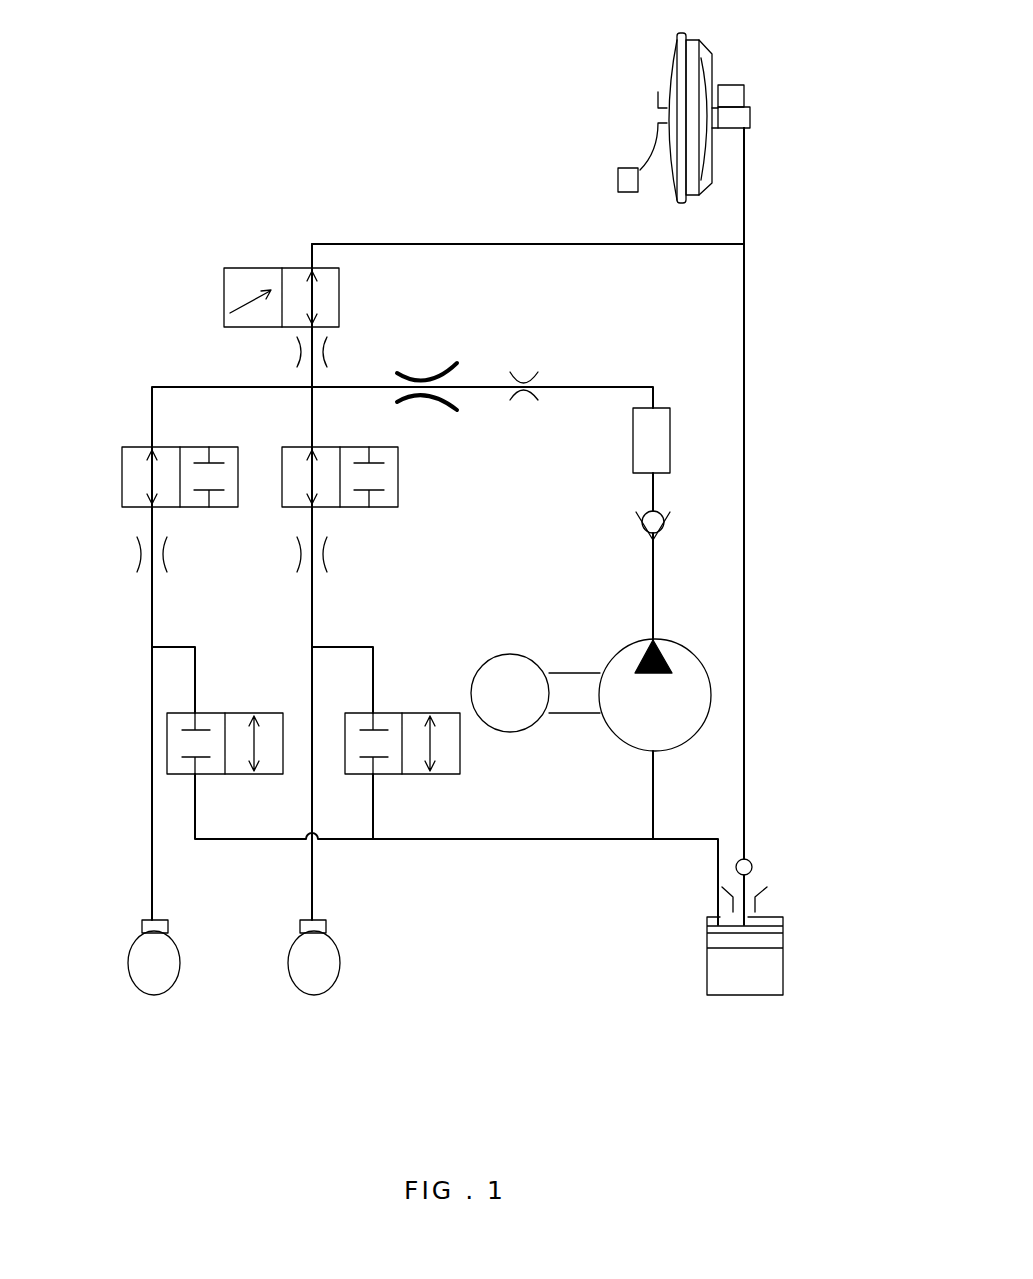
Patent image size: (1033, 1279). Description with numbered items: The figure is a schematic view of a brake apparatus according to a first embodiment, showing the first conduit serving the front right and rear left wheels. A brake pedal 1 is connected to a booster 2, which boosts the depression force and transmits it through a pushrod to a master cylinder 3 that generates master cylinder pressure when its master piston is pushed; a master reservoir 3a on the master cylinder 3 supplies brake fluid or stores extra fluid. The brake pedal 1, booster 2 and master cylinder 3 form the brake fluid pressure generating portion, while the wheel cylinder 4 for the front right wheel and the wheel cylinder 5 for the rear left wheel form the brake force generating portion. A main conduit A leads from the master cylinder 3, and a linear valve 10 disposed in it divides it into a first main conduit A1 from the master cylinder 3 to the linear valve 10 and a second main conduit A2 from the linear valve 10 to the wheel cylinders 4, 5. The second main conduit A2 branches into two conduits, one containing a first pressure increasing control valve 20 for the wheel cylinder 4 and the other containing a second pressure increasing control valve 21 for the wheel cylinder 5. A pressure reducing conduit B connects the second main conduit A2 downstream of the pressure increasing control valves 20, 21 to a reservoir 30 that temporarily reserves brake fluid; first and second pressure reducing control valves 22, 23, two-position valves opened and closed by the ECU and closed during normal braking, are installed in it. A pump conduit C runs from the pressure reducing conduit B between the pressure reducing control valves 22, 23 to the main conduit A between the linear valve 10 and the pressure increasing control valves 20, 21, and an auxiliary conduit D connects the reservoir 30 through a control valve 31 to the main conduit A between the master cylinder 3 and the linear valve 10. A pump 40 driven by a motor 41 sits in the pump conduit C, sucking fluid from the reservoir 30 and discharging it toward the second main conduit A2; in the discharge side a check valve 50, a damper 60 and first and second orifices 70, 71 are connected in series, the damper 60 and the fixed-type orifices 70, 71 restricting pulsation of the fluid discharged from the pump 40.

The brake pedal 1 is at (618, 180).
The booster 2 is at (670, 58).
The master cylinder 3 is at (762, 114).
The master reservoir 3a is at (727, 98).
The wheel cylinder 4 is at (313, 997).
The wheel cylinder 5 is at (155, 997).
The linear valve 10 is at (224, 297).
The first pressure increasing control valve 20 is at (398, 478).
The second pressure increasing control valve 21 is at (122, 479).
The first pressure reducing control valve 22 is at (418, 776).
The second pressure reducing control valve 23 is at (236, 776).
The reservoir 30 is at (745, 997).
The control valve 31 is at (755, 867).
The pump 40 is at (612, 655).
The motor 41 is at (493, 655).
The check valve 50 is at (637, 524).
The damper 60 is at (633, 445).
The first orifice 70 is at (523, 378).
The second orifice 71 is at (422, 375).
The main conduit A is at (758, 217).
The first main conduit A1 is at (358, 244).
The second main conduit A2 is at (310, 375).
The pressure reducing conduit B is at (197, 672).
The pump conduit C is at (605, 386).
The auxiliary conduit D is at (747, 574).